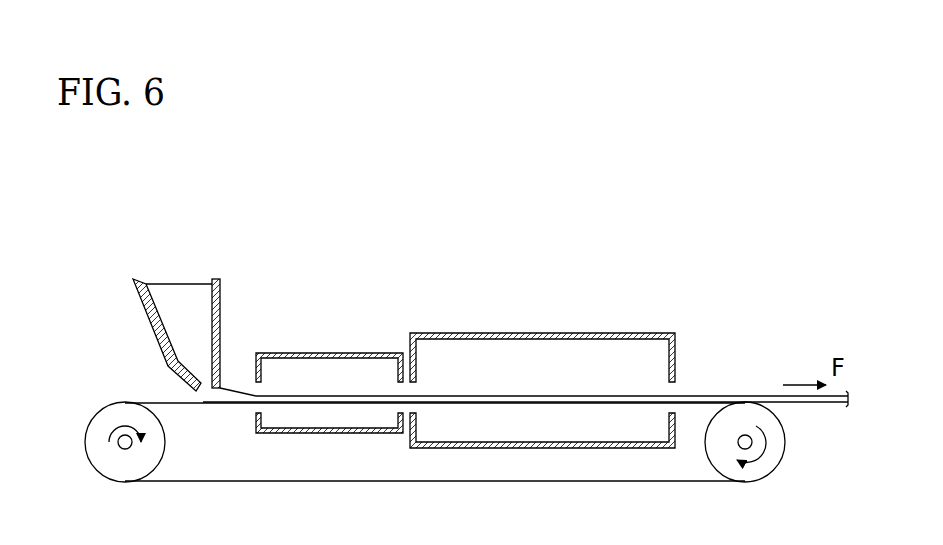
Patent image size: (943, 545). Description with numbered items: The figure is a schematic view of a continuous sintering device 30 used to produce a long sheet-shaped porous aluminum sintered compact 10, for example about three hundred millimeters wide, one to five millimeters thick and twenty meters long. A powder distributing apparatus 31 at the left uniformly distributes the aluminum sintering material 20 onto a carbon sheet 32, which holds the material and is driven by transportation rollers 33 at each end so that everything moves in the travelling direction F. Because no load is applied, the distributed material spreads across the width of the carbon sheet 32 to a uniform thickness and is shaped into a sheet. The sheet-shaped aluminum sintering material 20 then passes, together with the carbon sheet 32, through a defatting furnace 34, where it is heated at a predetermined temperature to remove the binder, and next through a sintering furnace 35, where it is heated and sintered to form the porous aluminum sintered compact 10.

The porous aluminum sintered compact 10 is at (716, 394).
The aluminum sintering material 20 is at (182, 292).
The continuous sintering device 30 is at (710, 296).
The powder distributing apparatus 31 is at (220, 292).
The carbon sheet 32 is at (154, 410).
The transportation roller 33 is at (108, 464).
The defatting furnace 34 is at (322, 352).
The sintering furnace 35 is at (576, 332).